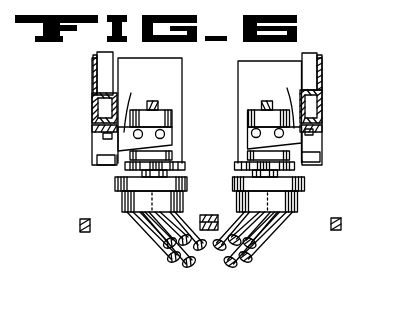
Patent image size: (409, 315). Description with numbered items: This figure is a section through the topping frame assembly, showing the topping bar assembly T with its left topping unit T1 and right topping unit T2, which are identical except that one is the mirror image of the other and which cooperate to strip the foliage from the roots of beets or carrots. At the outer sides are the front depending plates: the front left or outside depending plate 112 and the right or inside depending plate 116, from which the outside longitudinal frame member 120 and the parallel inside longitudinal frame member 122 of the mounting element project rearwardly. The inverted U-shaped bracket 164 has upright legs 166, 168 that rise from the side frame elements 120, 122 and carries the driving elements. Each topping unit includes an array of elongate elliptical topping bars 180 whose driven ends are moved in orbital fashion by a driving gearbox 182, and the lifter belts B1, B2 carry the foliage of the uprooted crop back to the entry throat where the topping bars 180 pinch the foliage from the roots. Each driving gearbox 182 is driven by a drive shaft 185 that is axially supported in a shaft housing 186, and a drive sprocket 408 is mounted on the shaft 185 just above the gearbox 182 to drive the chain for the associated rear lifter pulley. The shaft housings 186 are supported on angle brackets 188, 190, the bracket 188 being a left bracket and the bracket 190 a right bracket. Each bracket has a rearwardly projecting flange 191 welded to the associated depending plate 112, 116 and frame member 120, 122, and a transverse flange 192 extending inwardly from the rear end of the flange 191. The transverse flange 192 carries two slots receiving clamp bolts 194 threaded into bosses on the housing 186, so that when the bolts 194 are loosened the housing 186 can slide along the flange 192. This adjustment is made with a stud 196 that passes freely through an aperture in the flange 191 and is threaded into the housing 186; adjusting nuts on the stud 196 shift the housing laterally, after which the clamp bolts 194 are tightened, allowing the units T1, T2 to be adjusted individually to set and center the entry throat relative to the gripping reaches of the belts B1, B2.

The front left depending plate 112 is at (170, 58).
The right front depending plate 116 is at (274, 65).
The left longitudinal frame member 120 is at (92, 96).
The right longitudinal frame member 122 is at (322, 96).
The inverted U-shaped bracket 164 is at (328, 60).
The upright leg 166 is at (93, 68).
The upright leg 168 is at (322, 75).
The topping bars 180 is at (162, 233).
The driving gearbox 182 is at (121, 205).
The drive shaft 185 is at (258, 105).
The shaft housing 186 is at (247, 115).
The left angle bracket 188 is at (100, 146).
The right angle bracket 190 is at (314, 142).
The rearwardly projecting flange 191 is at (97, 160).
The transverse flange 192 is at (209, 101).
The clamp bolts 194 is at (247, 133).
The adjusting stud 196 is at (102, 133).
The drive sprocket 408 is at (245, 163).
The lifter belt B1 is at (87, 232).
The lifter belt B2 is at (341, 218).
The topping bar assembly T is at (152, 265).
The left topping unit T1 is at (180, 270).
The right topping unit T2 is at (255, 263).